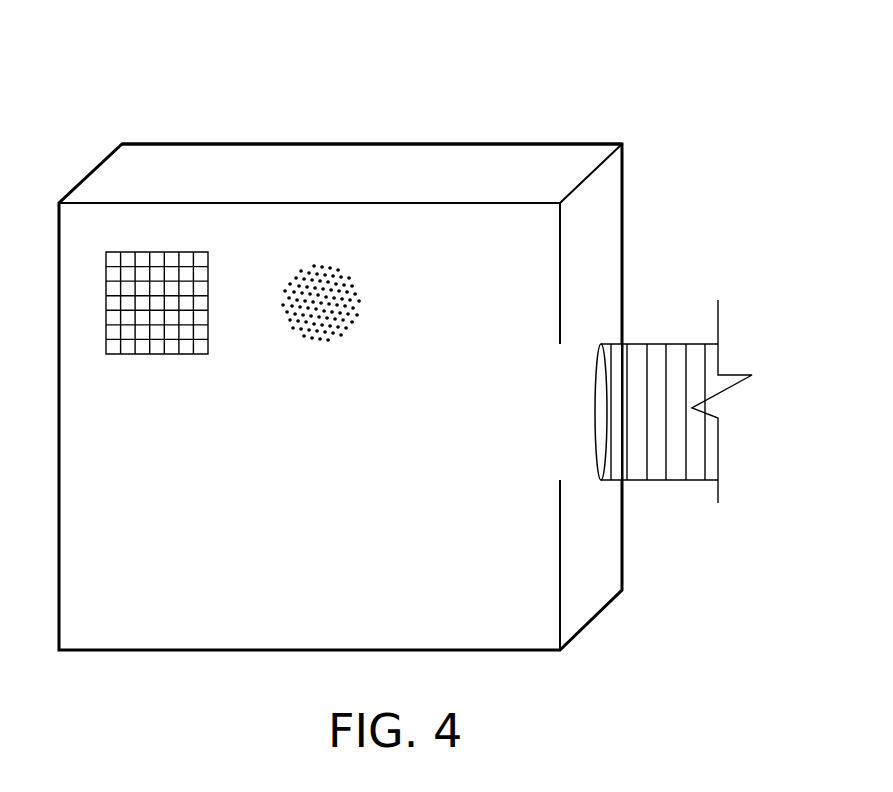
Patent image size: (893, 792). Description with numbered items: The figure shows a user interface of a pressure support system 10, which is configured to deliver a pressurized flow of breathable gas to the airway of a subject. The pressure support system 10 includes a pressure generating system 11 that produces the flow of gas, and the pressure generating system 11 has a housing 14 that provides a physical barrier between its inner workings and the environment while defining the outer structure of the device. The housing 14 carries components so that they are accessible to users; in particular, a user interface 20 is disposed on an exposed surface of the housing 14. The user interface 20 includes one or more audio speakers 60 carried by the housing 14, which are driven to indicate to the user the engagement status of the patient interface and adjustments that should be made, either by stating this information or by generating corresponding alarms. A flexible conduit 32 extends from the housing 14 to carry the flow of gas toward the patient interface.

The pressure support system 10 is at (618, 99).
The pressure generating system 11 is at (445, 120).
The housing 14 is at (524, 170).
The user interface 20 is at (272, 348).
The flexible conduit 32 is at (652, 348).
The audio speakers 60 is at (203, 348).